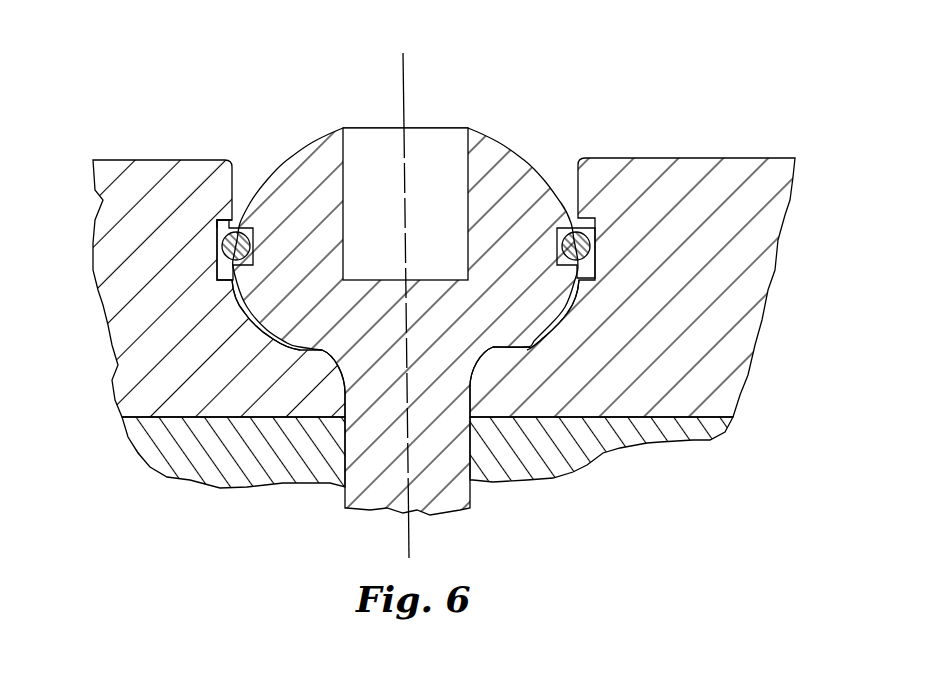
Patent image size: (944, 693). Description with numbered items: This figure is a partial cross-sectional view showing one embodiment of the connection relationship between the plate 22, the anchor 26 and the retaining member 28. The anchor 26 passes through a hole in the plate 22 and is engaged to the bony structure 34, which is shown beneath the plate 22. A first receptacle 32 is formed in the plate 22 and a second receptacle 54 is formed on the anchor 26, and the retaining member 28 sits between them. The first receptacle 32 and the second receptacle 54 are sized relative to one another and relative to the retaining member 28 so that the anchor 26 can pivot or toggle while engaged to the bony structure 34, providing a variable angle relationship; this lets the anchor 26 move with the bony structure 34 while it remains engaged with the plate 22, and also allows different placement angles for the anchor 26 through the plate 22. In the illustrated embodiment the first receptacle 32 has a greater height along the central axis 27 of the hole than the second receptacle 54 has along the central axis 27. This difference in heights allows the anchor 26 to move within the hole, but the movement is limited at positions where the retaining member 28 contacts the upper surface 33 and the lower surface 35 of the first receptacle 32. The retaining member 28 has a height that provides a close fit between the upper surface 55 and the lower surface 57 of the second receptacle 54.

The plate 22 is at (740, 308).
The anchor 26 is at (513, 163).
The central axis 27 is at (404, 82).
The retaining member 28 is at (217, 270).
The first receptacle 32 is at (227, 237).
The upper surface 33 is at (228, 220).
The bony structure 34 is at (580, 440).
The lower surface 35 is at (232, 300).
The second receptacle 54 is at (253, 247).
The upper surface 55 is at (568, 227).
The lower surface 57 is at (577, 297).